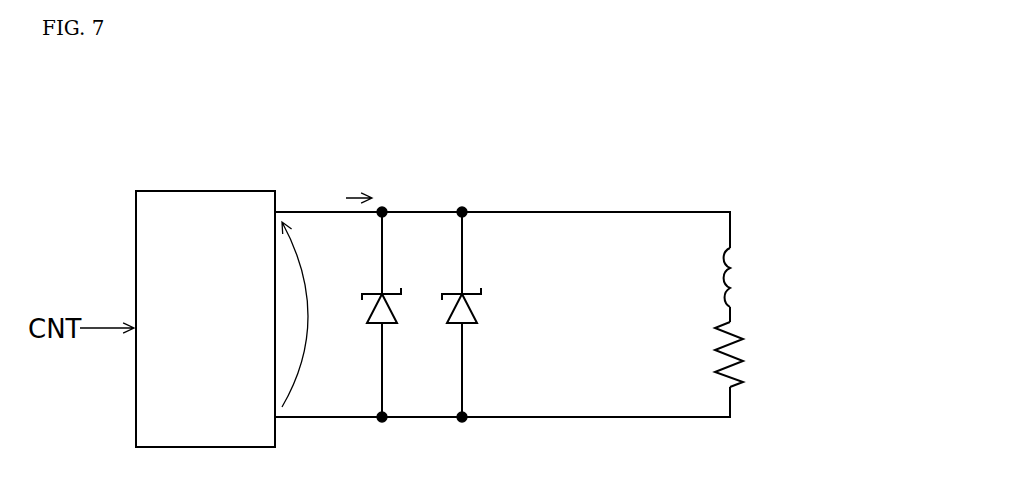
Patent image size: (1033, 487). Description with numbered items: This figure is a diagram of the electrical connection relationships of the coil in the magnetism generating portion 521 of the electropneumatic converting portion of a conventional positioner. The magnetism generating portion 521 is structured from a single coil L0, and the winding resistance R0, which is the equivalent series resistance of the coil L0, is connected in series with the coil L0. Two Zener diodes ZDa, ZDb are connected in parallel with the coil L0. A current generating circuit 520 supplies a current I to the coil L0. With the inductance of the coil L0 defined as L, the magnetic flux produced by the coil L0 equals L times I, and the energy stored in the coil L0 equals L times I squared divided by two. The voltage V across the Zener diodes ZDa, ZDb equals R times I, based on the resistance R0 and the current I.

The current generating circuit 520 is at (203, 191).
The magnetism generating portion 521 is at (589, 260).
The Zener diode ZDa is at (397, 314).
The Zener diode ZDb is at (477, 314).
The coil L0 is at (752, 279).
The winding resistance R0 is at (748, 356).